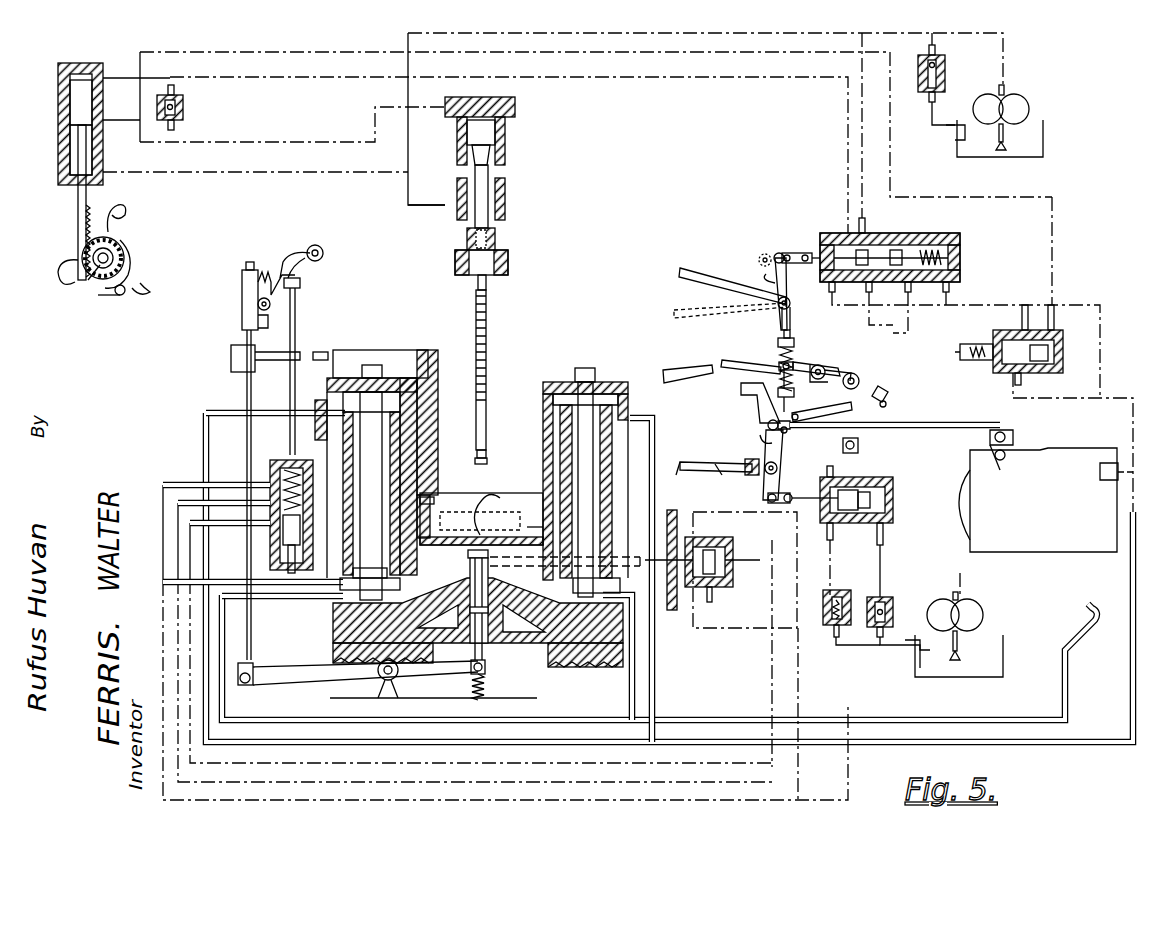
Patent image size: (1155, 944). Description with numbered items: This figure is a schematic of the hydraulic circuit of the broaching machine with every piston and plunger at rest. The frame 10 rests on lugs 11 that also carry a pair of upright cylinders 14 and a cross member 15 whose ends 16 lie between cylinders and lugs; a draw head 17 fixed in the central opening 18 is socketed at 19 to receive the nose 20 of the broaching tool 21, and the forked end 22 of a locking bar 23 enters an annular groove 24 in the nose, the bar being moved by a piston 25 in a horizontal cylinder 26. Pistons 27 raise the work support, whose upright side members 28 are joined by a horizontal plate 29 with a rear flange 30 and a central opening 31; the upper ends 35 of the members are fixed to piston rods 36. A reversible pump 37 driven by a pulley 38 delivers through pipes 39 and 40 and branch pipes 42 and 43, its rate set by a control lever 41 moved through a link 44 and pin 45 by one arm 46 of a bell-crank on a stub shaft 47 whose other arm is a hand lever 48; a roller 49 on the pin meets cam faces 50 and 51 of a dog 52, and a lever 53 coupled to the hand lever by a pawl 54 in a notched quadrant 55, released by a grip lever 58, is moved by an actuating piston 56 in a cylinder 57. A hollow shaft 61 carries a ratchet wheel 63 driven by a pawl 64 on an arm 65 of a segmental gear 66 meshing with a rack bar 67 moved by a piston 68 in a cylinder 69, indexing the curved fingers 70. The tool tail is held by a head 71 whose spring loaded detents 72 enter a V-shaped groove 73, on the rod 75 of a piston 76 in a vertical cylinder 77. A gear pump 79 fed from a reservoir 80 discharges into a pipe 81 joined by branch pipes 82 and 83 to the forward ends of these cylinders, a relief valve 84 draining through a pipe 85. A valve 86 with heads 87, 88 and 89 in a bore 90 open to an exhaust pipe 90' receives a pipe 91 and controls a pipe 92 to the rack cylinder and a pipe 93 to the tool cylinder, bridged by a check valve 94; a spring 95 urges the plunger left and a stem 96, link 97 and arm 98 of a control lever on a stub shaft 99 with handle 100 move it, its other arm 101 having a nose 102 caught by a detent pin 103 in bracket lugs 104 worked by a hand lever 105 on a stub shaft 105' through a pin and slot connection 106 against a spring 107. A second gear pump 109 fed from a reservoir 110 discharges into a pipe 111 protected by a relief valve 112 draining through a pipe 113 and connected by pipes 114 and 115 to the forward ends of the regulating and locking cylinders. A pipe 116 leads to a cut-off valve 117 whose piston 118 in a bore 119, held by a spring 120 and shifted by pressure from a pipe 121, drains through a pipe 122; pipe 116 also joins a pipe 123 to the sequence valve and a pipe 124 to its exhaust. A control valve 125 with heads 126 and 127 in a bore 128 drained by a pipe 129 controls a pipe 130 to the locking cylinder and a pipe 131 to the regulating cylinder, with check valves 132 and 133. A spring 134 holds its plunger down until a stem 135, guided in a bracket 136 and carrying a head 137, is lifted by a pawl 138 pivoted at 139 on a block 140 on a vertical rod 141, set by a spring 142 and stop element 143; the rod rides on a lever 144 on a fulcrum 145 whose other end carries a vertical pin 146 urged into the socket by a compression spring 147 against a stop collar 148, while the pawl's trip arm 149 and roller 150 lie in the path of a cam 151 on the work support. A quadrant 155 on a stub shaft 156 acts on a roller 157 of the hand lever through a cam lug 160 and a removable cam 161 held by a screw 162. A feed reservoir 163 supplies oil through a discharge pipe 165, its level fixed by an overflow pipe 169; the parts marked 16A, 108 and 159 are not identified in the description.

The frame 10 is at (672, 610).
The forward lugs 11 is at (400, 642).
The upright cylinders 14 is at (415, 562).
The cross member 15 is at (496, 664).
The ends of cross member 16 is at (340, 628).
The cylinder wall 16A is at (425, 400).
The draw head 17 is at (456, 590).
The central opening 18 is at (490, 635).
The socket 19 is at (468, 554).
The nose 20 is at (487, 462).
The broaching tool 21 is at (488, 360).
The forked end 22 is at (565, 560).
The locking bar 23 is at (650, 552).
The annular groove 24 is at (486, 452).
The tool locking piston 25 is at (712, 590).
The horizontal cylinder 26 is at (700, 537).
The pistons 27 is at (352, 584).
The upright side members 28 is at (420, 470).
The horizontal plate 29 is at (523, 533).
The upright flange 30 is at (445, 508).
The central opening 31 is at (482, 510).
The upper ends of side members 35 is at (396, 352).
The piston rods 36 is at (372, 440).
The variable displacement reversible flow pump 37 is at (1098, 480).
The pulley 38 is at (966, 528).
The pipe 39 is at (424, 722).
The pipe 40 is at (395, 746).
The control lever 41 is at (1010, 432).
The branch pipes 42 is at (300, 612).
The branch pipes 43 is at (203, 436).
The link 44 is at (940, 428).
The pin 45 is at (787, 432).
The bell-crank arm 46 is at (779, 462).
The stub shaft 47 is at (777, 470).
The hand lever 48 is at (712, 464).
The roller 49 is at (768, 425).
The cam face 50 is at (760, 436).
The cam face 51 is at (784, 378).
The dog 52 is at (741, 390).
The lever 53 is at (766, 486).
The pawl 54 is at (718, 470).
The notched quadrant 55 is at (750, 459).
The pump regulating piston 56 is at (895, 498).
The cylinder 57 is at (862, 480).
The grip lever 58 is at (680, 470).
The hollow shaft 61 is at (112, 256).
The ratchet wheel 63 is at (92, 283).
The pawl 64 is at (132, 268).
The arm 65 is at (118, 295).
The segmental gear 66 is at (110, 250).
The rack bar 67 is at (78, 225).
The work handling piston 68 is at (64, 100).
The cylinder 69 is at (62, 145).
The work supporting fingers 70 is at (116, 210).
The head 71 is at (495, 240).
The spring loaded detents 72 is at (462, 262).
The V-shaped groove 73 is at (488, 278).
The piston rod 75 is at (490, 195).
The tool handling piston 76 is at (495, 130).
The vertical cylinder 77 is at (505, 155).
The gear pump 79 is at (1016, 105).
The reservoir 80 is at (1043, 148).
The pressure pipe 81 is at (607, 40).
The branch pipe 82 is at (243, 172).
The branch pipe 83 is at (408, 205).
The spring loaded relief valve 84 is at (945, 66).
The drain pipe 85 is at (950, 126).
The valve 86 is at (935, 240).
The plunger head 87 is at (808, 253).
The plunger head 88 is at (898, 245).
The plunger head 89 is at (908, 284).
The bore 90 is at (871, 292).
The exhaust pipe 90' is at (987, 345).
The pipe 91 is at (865, 226).
The pipe 92 is at (122, 73).
The pipe 93 is at (112, 122).
The check valve 94 is at (183, 108).
The compression spring 95 is at (962, 258).
The stem 96 is at (829, 283).
The link 97 is at (779, 253).
The control lever arm 98 is at (766, 274).
The stub shaft 99 is at (790, 306).
The operating handle 100 is at (683, 268).
The control lever arm 101 is at (782, 320).
The nose 102 is at (787, 332).
The detent pin 103 is at (791, 333).
The bracket lugs 104 is at (795, 342).
The hand lever 105 is at (722, 361).
The stub shaft 105' is at (832, 361).
The pin and slot connection 106 is at (784, 362).
The spring 107 is at (792, 370).
The pivot 108 is at (760, 257).
The second gear pump 109 is at (972, 620).
The reservoir 110 is at (1000, 664).
The pipe 111 is at (220, 525).
The pressure relief valve 112 is at (825, 612).
The drain pipe 113 is at (912, 645).
The pipe 114 is at (832, 560).
The pipe 115 is at (735, 628).
The pipe 116 is at (1026, 305).
The cut-off valve 117 is at (1055, 333).
The piston 118 is at (1048, 350).
The bore 119 is at (1017, 376).
The compression spring 120 is at (990, 358).
The pipe 121 is at (140, 98).
The drain pipe 122 is at (1093, 398).
The pipe 123 is at (893, 325).
The pipe 124 is at (909, 300).
The control valve 125 is at (280, 460).
The plunger head 126 is at (302, 505).
The plunger head 127 is at (273, 562).
The bore 128 is at (278, 547).
The pipe 129 is at (163, 555).
The pipe 130 is at (178, 622).
The pipe 131 is at (720, 540).
The check valve 132 is at (798, 530).
The check valve 133 is at (893, 610).
The spring 134 is at (302, 476).
The stem 135 is at (291, 385).
The bracket 136 is at (300, 352).
The head 137 is at (300, 282).
The pawl 138 is at (297, 297).
The pawl pivot 139 is at (258, 306).
The block 140 is at (242, 296).
The vertical rod 141 is at (247, 385).
The spring 142 is at (266, 272).
The stop element 143 is at (262, 328).
The lever 144 is at (312, 692).
The fixed fulcrum 145 is at (392, 676).
The vertical pin 146 is at (478, 648).
The compression spring 147 is at (487, 688).
The stop collar 148 is at (470, 612).
The trip arm 149 is at (295, 250).
The roller 150 is at (322, 250).
The cam 151 is at (320, 400).
The quadrant 155 is at (858, 378).
The stub shaft 156 is at (858, 446).
The roller 157 is at (858, 378).
The arm 159 is at (852, 368).
The cam lug 160 is at (822, 410).
The cam 161 is at (878, 392).
The screw 162 is at (882, 406).
The feed reservoir 163 is at (372, 362).
The discharge pipe 165 is at (442, 490).
The overflow pipe 169 is at (322, 354).